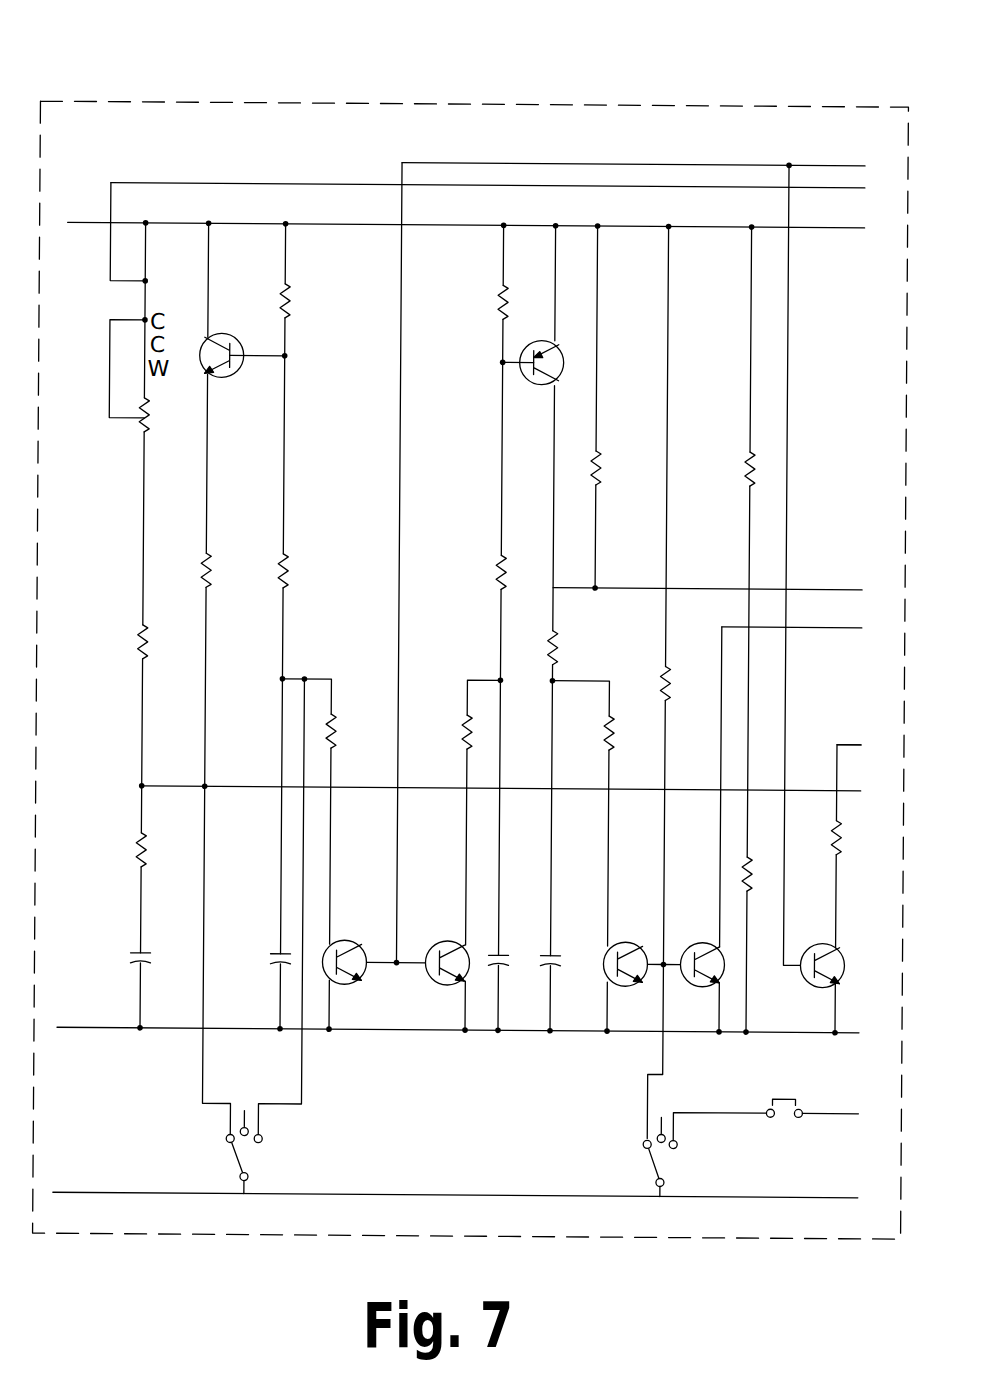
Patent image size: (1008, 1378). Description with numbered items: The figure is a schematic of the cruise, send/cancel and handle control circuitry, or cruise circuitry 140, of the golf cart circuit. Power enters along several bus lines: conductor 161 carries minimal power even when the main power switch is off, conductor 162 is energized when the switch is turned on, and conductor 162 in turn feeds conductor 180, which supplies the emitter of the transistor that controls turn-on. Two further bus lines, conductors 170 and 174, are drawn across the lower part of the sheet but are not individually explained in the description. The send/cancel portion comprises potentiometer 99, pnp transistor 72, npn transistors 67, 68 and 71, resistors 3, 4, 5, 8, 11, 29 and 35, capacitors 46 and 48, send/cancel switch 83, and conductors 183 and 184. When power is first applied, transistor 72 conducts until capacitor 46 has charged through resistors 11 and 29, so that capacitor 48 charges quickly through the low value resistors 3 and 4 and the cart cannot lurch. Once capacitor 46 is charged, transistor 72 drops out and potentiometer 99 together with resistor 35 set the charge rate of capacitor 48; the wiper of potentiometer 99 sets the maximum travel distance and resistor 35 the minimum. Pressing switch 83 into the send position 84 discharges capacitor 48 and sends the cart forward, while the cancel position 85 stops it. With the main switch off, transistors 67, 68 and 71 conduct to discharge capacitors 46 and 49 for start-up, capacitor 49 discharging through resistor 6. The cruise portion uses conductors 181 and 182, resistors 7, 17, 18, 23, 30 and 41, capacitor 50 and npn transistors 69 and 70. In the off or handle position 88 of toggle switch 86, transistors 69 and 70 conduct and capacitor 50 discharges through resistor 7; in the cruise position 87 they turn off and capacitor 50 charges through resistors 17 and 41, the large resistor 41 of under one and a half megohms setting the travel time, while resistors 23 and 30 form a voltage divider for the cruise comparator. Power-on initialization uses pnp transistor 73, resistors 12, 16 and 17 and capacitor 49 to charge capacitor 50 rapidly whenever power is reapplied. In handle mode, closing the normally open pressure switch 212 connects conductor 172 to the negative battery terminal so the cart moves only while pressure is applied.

The cruise circuitry 140 is at (200, 80).
The conductor 161 is at (851, 162).
The conductor 162 is at (820, 189).
The conductor 180 is at (79, 227).
The conductor 181 is at (845, 586).
The conductor 182 is at (826, 628).
The conductor 183 is at (860, 738).
The conductor 184 is at (860, 787).
The ground bus 170 is at (73, 1033).
The switch common line 174 is at (70, 1198).
The potentiometer 99 is at (148, 438).
The resistor 35 is at (138, 650).
The resistor 4 is at (140, 866).
The capacitor 48 is at (150, 957).
The pnp transistor 72 is at (222, 332).
The resistor 3 is at (202, 575).
The resistor 11 is at (290, 300).
The resistor 29 is at (288, 582).
The capacitor 46 is at (278, 958).
The resistor 5 is at (337, 748).
The npn transistor 67 is at (345, 935).
The npn transistor 68 is at (440, 978).
The resistor 6 is at (464, 748).
The resistor 12 is at (498, 290).
The resistor 16 is at (498, 580).
The capacitor 49 is at (503, 972).
The pnp transistor 73 is at (565, 365).
The resistor 17 is at (555, 660).
The capacitor 50 is at (555, 972).
The resistor 41 is at (598, 483).
The resistor 7 is at (612, 748).
The npn transistor 69 is at (625, 940).
The resistor 18 is at (668, 692).
The npn transistor 70 is at (695, 980).
The resistor 23 is at (745, 480).
The resistor 30 is at (752, 888).
The resistor 8 is at (842, 840).
The npn transistor 71 is at (815, 942).
The send/cancel switch 83 is at (252, 1178).
The send position 84 is at (229, 1138).
The cancel position 85 is at (266, 1140).
The cruise/handle toggle switch 86 is at (668, 1181).
The cruise position 87 is at (646, 1146).
The handle position 88 is at (681, 1147).
The pressure switch 212 is at (796, 1094).
The conductor 172 is at (850, 1116).